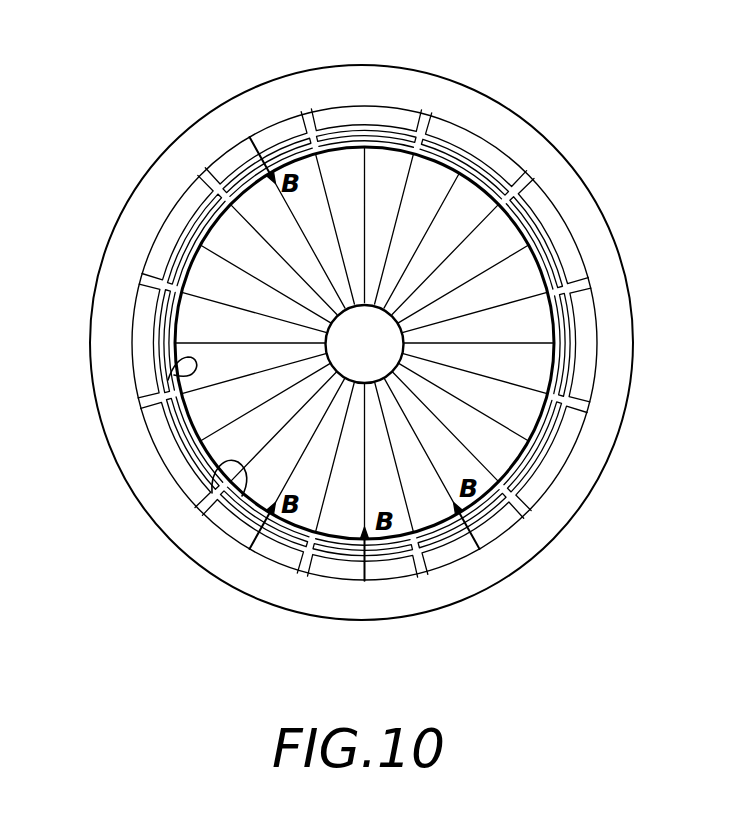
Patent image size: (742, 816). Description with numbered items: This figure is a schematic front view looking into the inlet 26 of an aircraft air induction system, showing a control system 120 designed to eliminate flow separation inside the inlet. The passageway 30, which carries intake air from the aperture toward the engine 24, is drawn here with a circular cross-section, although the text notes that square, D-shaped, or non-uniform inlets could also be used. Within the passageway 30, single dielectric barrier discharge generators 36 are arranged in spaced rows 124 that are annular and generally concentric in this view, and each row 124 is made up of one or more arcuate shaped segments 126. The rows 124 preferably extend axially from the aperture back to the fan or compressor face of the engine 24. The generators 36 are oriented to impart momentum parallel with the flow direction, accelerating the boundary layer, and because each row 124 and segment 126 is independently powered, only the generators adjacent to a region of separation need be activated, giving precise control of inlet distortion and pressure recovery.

The control system 120 is at (104, 109).
The passageway 30 is at (418, 124).
The engine 24 is at (496, 165).
The inlet 26 is at (496, 187).
The single dielectric barrier discharge generators 36 is at (540, 270).
The rows 124 is at (168, 380).
The arcuate shaped segments 126 is at (212, 493).